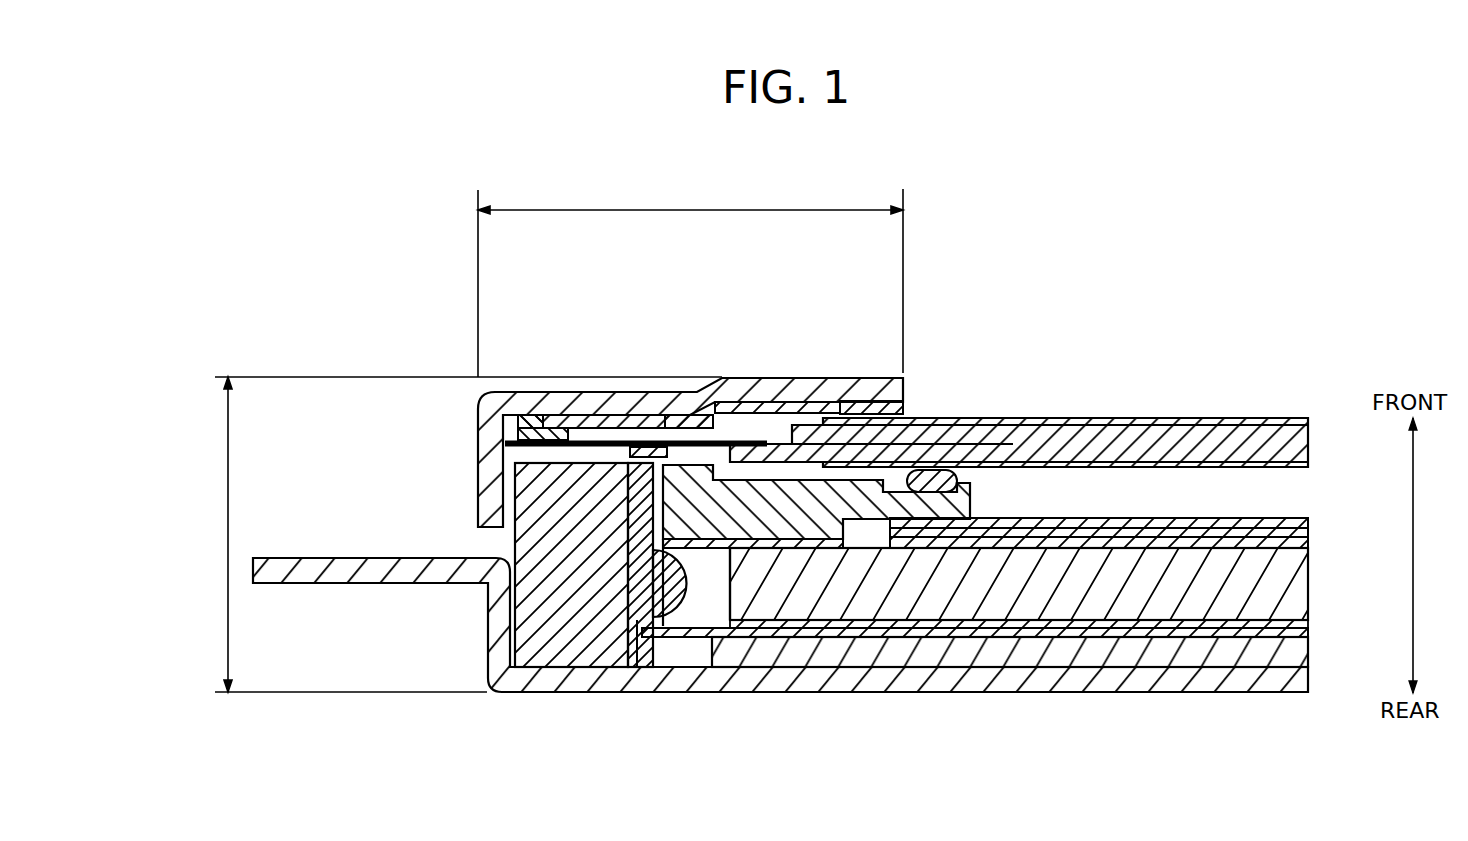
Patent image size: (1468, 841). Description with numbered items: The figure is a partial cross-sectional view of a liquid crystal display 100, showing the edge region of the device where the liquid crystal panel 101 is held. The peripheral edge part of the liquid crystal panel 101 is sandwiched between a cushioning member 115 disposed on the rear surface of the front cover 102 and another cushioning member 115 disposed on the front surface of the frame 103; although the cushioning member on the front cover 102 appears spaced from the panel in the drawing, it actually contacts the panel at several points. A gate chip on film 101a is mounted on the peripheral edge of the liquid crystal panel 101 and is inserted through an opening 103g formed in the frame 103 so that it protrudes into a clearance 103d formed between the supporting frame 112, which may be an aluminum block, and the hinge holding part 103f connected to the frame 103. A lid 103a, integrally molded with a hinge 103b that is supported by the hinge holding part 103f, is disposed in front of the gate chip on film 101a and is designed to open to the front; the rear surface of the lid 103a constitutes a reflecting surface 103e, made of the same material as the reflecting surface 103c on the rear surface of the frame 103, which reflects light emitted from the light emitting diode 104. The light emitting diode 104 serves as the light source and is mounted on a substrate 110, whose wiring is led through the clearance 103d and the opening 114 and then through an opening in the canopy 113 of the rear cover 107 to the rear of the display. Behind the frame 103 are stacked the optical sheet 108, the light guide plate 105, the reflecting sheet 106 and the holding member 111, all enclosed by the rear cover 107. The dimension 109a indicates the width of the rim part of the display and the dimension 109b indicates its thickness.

The liquid crystal display 100 is at (983, 190).
The liquid crystal panel 101 is at (1227, 437).
The gate chip on film (COF) 101a is at (645, 440).
The front cover 102 is at (515, 400).
The frame 103 is at (963, 503).
The lid 103a is at (587, 408).
The hinge 103b is at (538, 408).
The reflecting surface 103c is at (697, 550).
The clearance 103d is at (537, 453).
The reflecting surface 103e is at (742, 407).
The hinge holding part 103f is at (525, 428).
The opening 103g is at (675, 408).
The light emitting diode (LED) 104 is at (670, 607).
The light guide plate 105 is at (1285, 598).
The reflecting sheet 106 is at (688, 640).
The rear cover 107 is at (933, 677).
The optical sheet 108 is at (1312, 517).
The width of rim part 109a is at (690, 280).
The thickness of rim part 109b is at (228, 522).
The substrate 110 is at (640, 632).
The holding member 111 is at (1295, 653).
The supporting frame 112 is at (542, 648).
The canopy 113 is at (282, 565).
The opening 114 is at (496, 543).
The cushioning member 115 is at (905, 407).